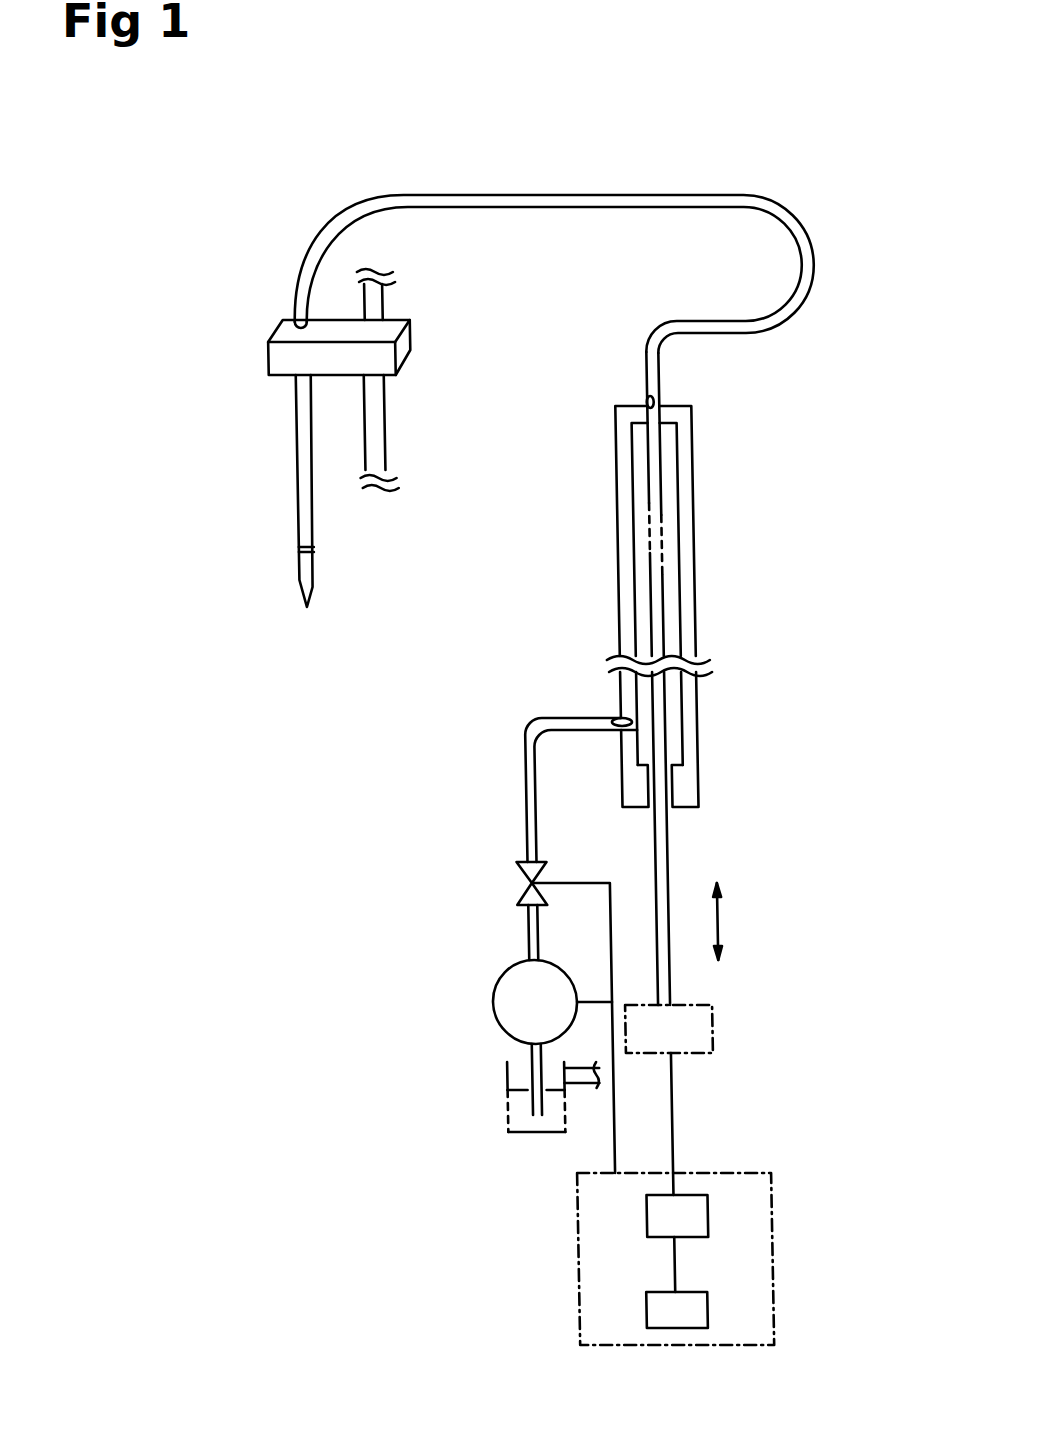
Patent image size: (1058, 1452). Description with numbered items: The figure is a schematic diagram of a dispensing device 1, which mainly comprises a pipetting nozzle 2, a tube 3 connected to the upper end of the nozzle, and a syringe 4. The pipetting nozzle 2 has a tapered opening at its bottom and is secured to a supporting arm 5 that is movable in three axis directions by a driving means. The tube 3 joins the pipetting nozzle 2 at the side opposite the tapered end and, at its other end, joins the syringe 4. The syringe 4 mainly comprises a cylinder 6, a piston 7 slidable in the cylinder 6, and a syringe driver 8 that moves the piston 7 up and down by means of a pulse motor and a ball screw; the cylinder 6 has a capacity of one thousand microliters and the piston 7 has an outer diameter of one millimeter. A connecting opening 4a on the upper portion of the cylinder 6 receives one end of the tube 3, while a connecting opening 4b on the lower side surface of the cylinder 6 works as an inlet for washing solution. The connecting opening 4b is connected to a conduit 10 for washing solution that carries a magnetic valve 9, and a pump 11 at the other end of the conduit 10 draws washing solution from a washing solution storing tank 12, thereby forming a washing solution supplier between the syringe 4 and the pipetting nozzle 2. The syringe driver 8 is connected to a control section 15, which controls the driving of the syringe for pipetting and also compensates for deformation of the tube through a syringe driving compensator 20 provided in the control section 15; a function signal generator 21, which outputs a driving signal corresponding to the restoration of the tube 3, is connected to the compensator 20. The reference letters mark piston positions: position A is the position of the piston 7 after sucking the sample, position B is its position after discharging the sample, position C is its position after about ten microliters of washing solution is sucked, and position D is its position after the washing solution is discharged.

The dispensing device 1 is at (793, 364).
The pipetting nozzle 2 is at (289, 452).
The tube 3 is at (553, 193).
The syringe 4 is at (524, 608).
The connecting opening 4a is at (640, 397).
The connecting opening 4b is at (600, 718).
The supporting arm 5 is at (389, 337).
The cylinder 6 is at (608, 560).
The piston 7 is at (652, 835).
The syringe driver 8 is at (694, 1013).
The magnetic valve 9 is at (504, 877).
The conduit for washing solution 10 is at (511, 933).
The pump 11 is at (475, 1003).
The washing solution storing tank 12 is at (487, 1080).
The control section 15 is at (556, 1222).
The syringe driving compensator 20 is at (686, 1212).
The function signal generator 21 is at (684, 1307).
The position of the piston after suction A is at (642, 595).
The position of the piston after discharging B is at (640, 478).
The position of the piston after sucking washing solution C is at (652, 514).
The position of the piston after discharging washing solution D is at (640, 447).